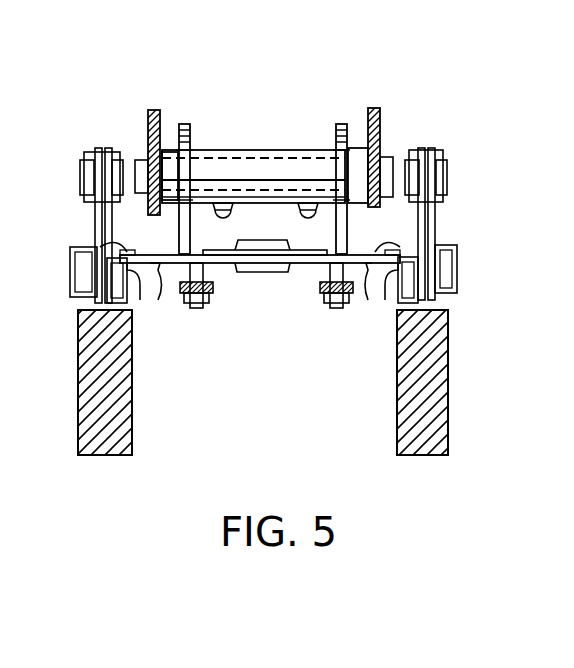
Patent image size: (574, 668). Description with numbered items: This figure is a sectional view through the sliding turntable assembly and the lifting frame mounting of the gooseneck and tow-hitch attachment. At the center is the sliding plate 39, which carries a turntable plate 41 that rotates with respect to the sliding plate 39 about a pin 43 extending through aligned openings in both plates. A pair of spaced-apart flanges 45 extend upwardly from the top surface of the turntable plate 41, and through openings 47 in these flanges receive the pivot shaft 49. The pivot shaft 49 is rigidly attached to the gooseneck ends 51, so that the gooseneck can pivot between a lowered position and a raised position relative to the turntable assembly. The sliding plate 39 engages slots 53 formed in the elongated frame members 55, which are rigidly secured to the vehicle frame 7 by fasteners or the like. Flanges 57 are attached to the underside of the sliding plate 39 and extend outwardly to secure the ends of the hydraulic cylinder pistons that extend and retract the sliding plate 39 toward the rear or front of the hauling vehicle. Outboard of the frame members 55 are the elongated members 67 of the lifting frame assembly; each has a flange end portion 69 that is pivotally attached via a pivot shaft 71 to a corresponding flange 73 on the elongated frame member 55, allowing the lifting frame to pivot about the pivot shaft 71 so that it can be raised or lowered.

The vehicle frame 7 is at (418, 405).
The sliding plate 39 is at (226, 275).
The turntable plate 41 is at (356, 255).
The pin 43 is at (278, 275).
The flanges 45 is at (184, 124).
The through openings 47 is at (192, 152).
The pivot shaft 49 is at (263, 150).
The gooseneck ends 51 is at (150, 115).
The slots 53 is at (130, 300).
The elongated frame member 55 is at (118, 250).
The flanges 57 is at (208, 300).
The elongated members 67 is at (72, 290).
The flange end portion 69 is at (98, 215).
The pivot shaft 71 is at (82, 170).
The flange 73 is at (107, 226).